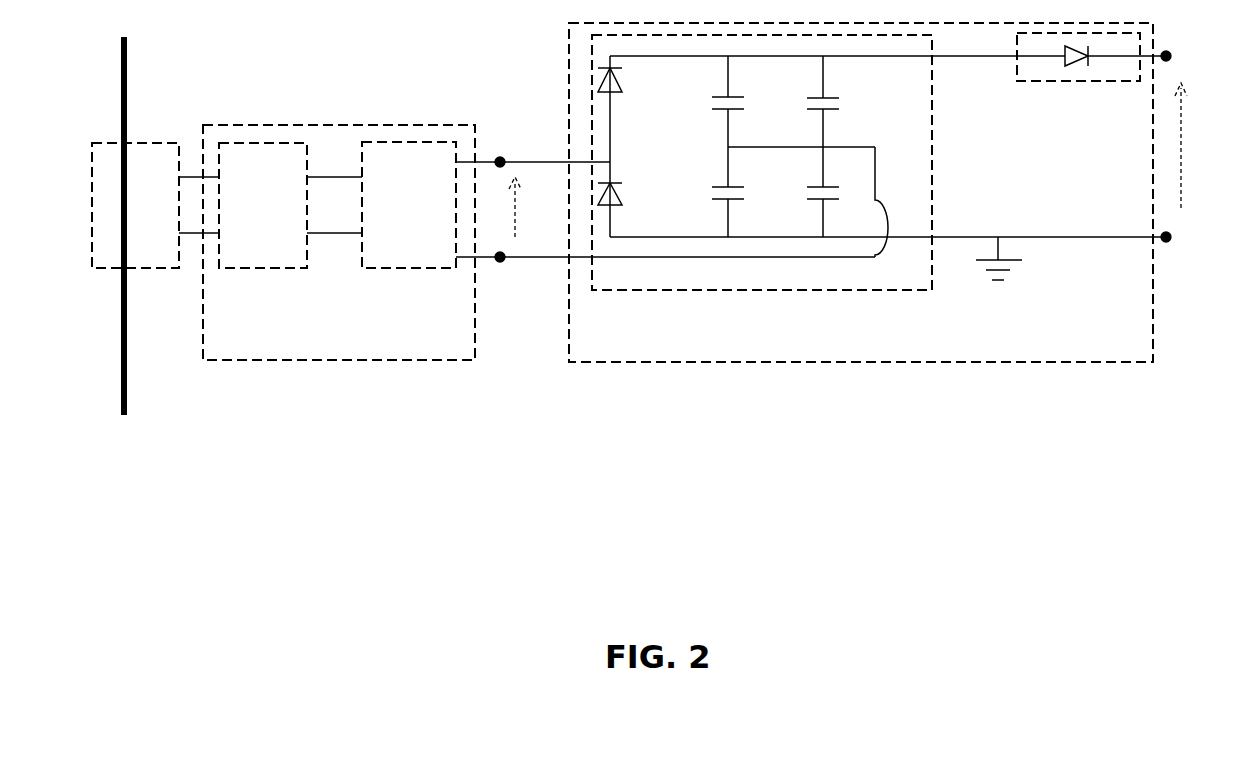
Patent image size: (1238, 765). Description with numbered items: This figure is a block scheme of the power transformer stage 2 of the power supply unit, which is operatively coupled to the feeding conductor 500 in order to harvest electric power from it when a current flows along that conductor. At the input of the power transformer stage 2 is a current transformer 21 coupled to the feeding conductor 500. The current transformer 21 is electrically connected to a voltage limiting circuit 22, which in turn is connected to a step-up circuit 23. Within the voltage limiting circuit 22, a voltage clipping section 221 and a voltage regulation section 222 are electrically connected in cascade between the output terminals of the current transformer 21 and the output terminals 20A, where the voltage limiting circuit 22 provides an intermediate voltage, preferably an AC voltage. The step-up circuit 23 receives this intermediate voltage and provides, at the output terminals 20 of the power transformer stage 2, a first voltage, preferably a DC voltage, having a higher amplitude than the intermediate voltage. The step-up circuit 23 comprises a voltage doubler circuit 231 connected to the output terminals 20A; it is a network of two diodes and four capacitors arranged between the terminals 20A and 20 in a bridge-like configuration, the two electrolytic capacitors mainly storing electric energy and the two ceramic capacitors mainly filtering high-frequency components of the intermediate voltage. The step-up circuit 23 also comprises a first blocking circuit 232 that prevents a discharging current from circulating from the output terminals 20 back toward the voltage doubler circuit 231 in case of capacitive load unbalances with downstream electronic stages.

The feeding conductor 500 is at (129, 437).
The power transformer stage 2 is at (589, 475).
The current transformer 21 is at (148, 283).
The voltage limiting circuit 22 is at (350, 284).
The voltage clipping section 221 is at (264, 288).
The voltage regulation section 222 is at (410, 288).
The output terminals 20A is at (511, 282).
The step-up circuit 23 is at (867, 234).
The voltage doubler circuit 231 is at (936, 287).
The first blocking circuit 232 is at (1087, 93).
The output terminals 20 is at (1182, 278).